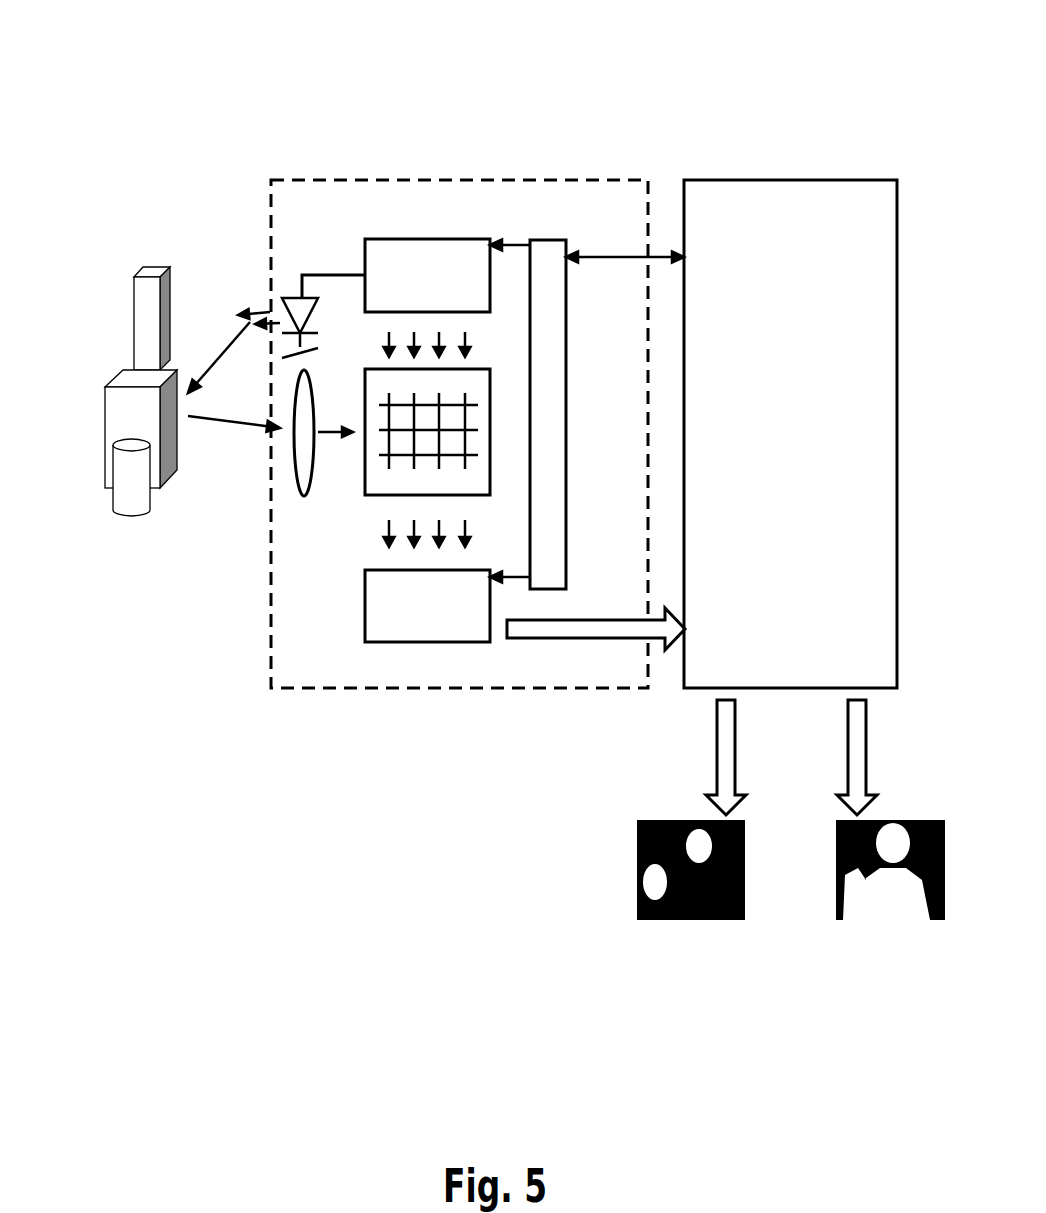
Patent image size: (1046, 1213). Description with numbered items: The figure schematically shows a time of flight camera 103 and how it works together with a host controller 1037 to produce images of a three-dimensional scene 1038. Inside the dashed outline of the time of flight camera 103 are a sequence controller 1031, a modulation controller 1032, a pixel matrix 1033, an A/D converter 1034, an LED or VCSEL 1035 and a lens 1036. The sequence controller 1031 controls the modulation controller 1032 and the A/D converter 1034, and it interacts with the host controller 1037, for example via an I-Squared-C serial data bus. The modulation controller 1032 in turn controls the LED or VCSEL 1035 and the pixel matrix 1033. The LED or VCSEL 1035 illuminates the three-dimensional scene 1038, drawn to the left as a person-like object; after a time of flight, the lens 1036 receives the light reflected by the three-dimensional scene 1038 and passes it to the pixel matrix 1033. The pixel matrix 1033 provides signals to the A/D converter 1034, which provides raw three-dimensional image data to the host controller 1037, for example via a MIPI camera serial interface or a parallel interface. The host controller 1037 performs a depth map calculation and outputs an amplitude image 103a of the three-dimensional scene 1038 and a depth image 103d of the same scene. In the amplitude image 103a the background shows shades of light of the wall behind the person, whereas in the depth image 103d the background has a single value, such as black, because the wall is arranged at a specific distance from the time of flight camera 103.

The time of flight camera 103 is at (303, 790).
The sequence controller 1031 is at (554, 247).
The modulation controller 1032 is at (424, 248).
The pixel matrix 1033 is at (377, 477).
The A/D converter 1034 is at (433, 630).
The LED or VCSEL 1035 is at (309, 296).
The lens 1036 is at (302, 484).
The host controller 1037 is at (707, 200).
The 3D scene 1038 is at (103, 273).
The amplitude image 103a is at (732, 1003).
The depth image 103d is at (937, 1003).